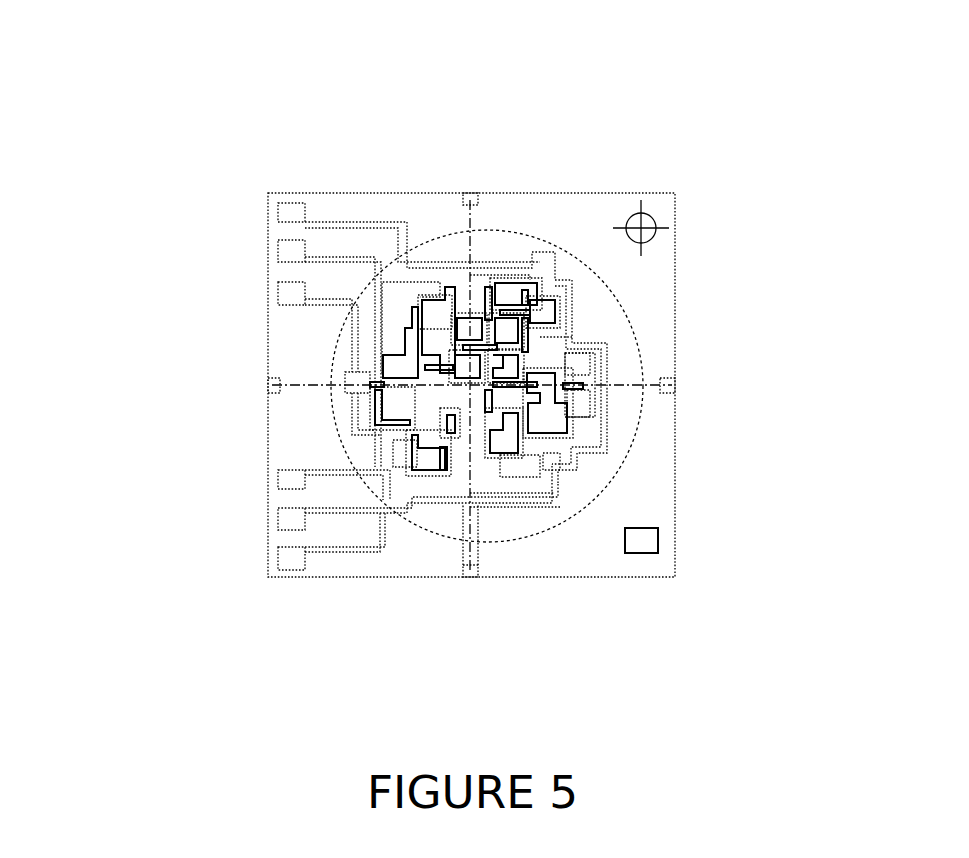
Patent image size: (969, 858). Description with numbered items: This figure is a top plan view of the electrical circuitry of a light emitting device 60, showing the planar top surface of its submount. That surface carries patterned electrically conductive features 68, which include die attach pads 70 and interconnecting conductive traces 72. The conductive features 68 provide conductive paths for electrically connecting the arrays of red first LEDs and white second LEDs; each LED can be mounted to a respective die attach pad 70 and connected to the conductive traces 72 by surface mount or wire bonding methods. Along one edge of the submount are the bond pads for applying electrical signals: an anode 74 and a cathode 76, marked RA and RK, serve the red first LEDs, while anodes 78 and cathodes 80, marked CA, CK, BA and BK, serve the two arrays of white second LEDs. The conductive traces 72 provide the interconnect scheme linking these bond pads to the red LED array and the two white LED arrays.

The light emitting device 60 is at (231, 105).
The patterned electrically conductive features 68 is at (510, 250).
The die attach pads 70 is at (582, 348).
The interconnecting conductive traces 72 is at (367, 255).
The anode bond pad 74 is at (290, 557).
The cathode bond pad 76 is at (292, 522).
The anode bond pads 78 is at (290, 244).
The cathode bond pads 80 is at (292, 200).